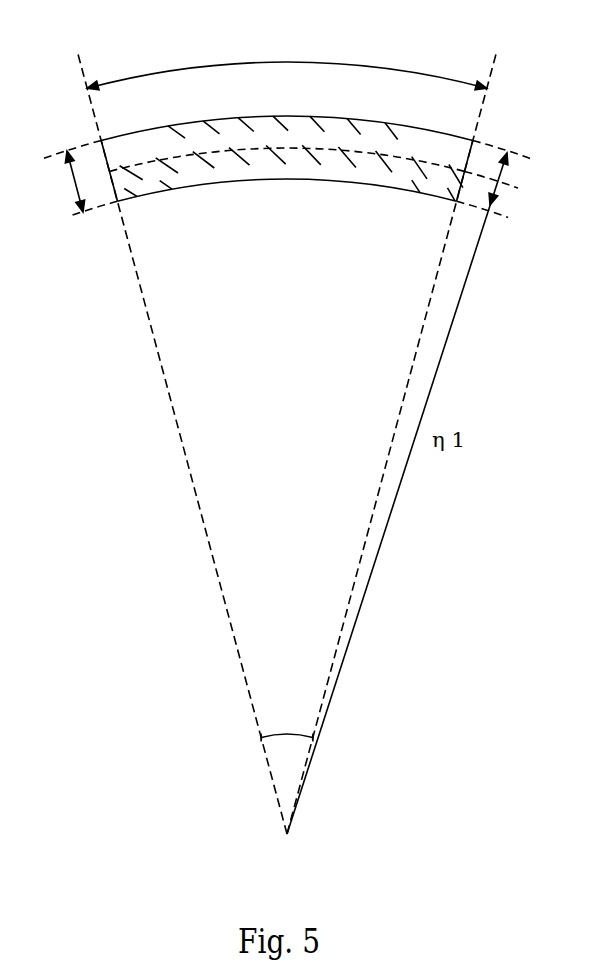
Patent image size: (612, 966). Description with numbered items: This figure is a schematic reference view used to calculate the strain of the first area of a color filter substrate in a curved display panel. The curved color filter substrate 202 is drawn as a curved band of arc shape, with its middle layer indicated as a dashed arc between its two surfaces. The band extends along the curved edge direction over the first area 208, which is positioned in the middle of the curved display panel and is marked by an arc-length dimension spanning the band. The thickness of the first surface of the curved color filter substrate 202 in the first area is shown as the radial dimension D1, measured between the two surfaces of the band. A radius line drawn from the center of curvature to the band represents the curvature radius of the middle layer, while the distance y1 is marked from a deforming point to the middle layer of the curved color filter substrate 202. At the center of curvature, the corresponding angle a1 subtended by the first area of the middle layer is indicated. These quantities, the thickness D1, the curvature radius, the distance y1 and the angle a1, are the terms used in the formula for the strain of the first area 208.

The curved color filter substrate 202 is at (143, 196).
The first area 208 is at (360, 64).
The thickness in the first area D1 is at (64, 181).
The distance from a deforming point to the middle layer y1 is at (415, 493).
The corresponding angle in the first area a1 is at (287, 727).